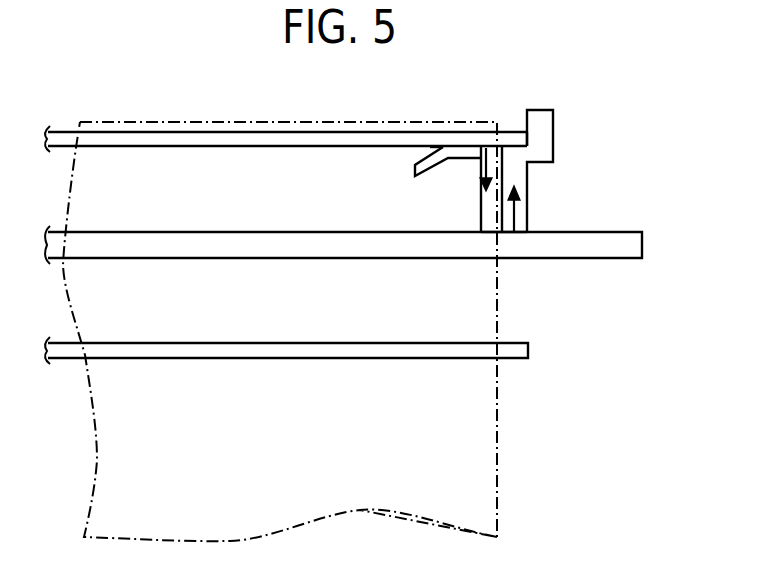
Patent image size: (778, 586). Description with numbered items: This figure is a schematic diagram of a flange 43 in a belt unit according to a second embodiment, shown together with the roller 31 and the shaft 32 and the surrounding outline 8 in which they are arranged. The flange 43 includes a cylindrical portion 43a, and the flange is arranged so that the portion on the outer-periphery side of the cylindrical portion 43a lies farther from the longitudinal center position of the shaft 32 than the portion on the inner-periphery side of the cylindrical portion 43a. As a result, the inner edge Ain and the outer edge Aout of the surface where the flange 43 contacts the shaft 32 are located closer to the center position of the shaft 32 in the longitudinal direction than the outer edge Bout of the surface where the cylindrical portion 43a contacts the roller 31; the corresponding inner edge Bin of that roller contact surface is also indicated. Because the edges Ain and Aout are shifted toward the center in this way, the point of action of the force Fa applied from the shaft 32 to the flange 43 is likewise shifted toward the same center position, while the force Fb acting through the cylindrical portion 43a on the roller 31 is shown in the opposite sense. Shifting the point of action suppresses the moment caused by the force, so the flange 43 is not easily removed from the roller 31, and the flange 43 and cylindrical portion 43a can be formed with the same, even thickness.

The image forming apparatus housing / main body 8 is at (476, 423).
The roller 31 is at (229, 148).
The shaft 32 is at (644, 246).
The flange 43 is at (518, 176).
The cylindrical portion 43a is at (468, 156).
The air inlet B Bin is at (447, 146).
The outer edge Bout is at (527, 145).
The inner edge Ain is at (497, 237).
The outer edge Aout is at (525, 237).
The force Fa is at (516, 213).
The air flow B Fb is at (481, 168).